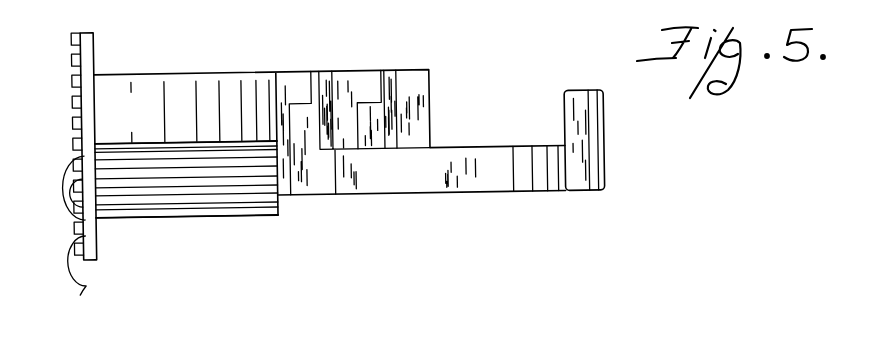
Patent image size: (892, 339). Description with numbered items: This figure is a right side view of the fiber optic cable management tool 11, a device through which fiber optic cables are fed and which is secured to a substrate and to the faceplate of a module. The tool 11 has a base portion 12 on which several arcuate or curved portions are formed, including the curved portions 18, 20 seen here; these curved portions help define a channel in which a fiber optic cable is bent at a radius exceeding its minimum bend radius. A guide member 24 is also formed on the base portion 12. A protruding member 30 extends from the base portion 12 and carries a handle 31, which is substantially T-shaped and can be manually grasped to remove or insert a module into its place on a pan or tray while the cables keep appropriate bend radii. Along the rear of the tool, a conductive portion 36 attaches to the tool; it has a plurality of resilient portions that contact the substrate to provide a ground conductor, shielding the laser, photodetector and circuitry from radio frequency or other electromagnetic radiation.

The fiber optic cable management tool 11 is at (607, 152).
The base portion 12 is at (86, 52).
The curved portion 18 is at (345, 124).
The curved portion 20 is at (282, 132).
The guide member 24 is at (423, 97).
The protruding member 30 is at (483, 160).
The handle 31 is at (580, 115).
The conductive portion 36 is at (90, 237).